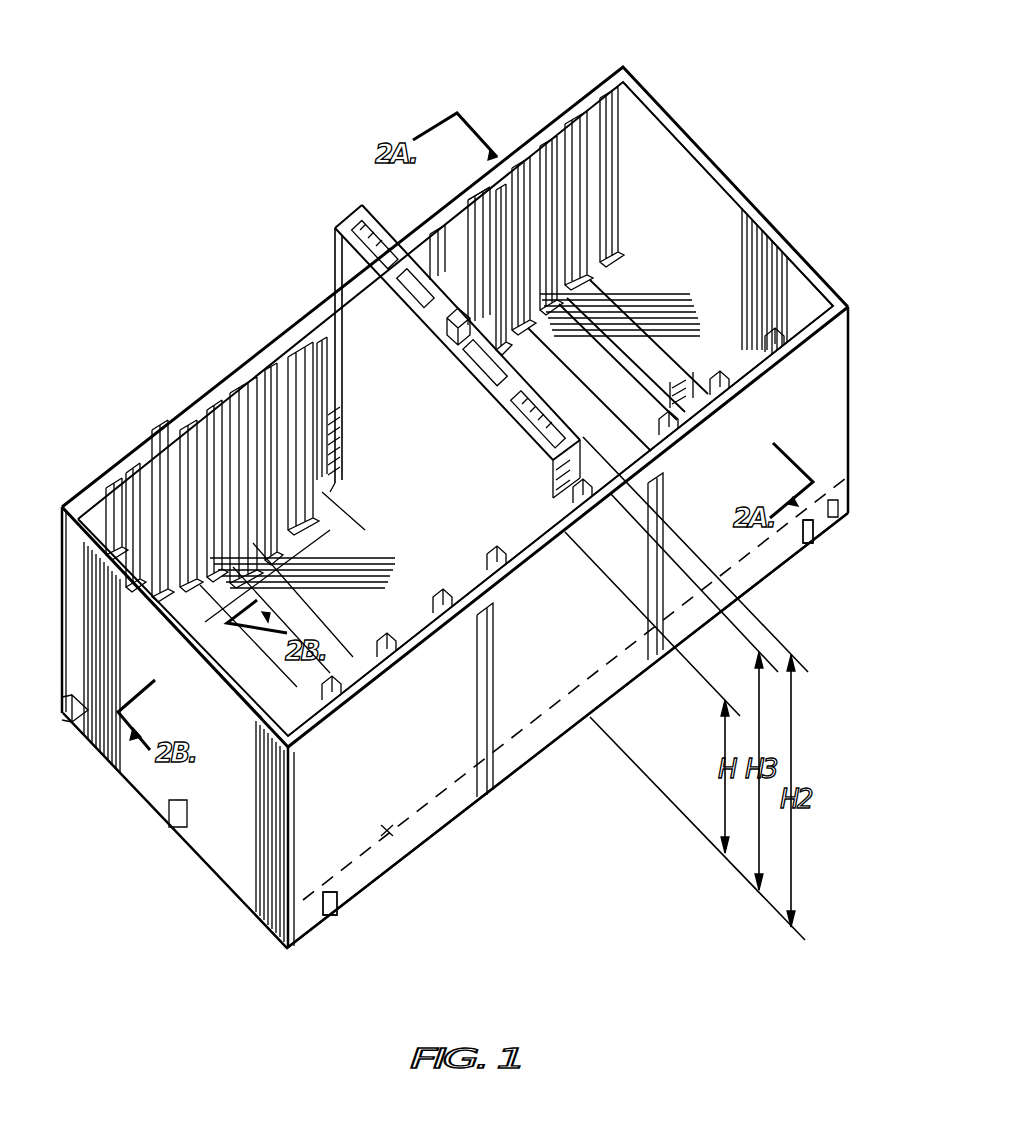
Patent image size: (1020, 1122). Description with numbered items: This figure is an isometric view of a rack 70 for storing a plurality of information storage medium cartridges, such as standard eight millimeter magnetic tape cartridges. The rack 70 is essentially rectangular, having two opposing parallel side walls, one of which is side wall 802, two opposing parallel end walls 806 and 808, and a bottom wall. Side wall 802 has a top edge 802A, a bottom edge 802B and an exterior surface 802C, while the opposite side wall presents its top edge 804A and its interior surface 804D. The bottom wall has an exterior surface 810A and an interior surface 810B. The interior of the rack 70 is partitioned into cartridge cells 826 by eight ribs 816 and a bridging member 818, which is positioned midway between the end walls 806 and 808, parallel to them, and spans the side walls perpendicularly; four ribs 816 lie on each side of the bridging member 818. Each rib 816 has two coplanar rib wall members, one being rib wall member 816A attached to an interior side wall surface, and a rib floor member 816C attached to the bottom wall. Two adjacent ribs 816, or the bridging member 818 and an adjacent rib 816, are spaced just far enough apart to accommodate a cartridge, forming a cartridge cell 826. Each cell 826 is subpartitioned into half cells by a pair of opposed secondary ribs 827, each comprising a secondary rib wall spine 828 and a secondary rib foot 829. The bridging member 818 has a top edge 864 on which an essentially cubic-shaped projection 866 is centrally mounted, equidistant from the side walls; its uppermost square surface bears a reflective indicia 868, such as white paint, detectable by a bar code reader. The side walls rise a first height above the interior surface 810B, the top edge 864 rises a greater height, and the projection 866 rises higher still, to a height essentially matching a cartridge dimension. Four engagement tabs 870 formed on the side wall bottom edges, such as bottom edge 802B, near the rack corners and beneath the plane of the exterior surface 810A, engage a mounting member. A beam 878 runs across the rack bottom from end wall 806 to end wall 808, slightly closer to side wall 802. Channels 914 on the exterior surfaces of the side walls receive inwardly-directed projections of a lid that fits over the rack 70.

The rack 70 is at (686, 878).
The side wall 802 is at (846, 450).
The top edge 802A is at (840, 326).
The bottom edge 802B is at (766, 580).
The exterior surface 802C is at (608, 645).
The top edge 804A is at (224, 388).
The interior surface 804D is at (263, 360).
The end wall 806 is at (237, 834).
The end wall 808 is at (762, 232).
The exterior surface 810A is at (410, 568).
The interior surface 810B is at (387, 862).
The rib 816 is at (582, 542).
The rib wall member 816A is at (520, 207).
The rib floor member 816C is at (600, 382).
The bridging member 818 is at (548, 497).
The cartridge cell 826 is at (334, 322).
The secondary rib 827 is at (338, 398).
The secondary rib wall spine 828 is at (340, 452).
The secondary rib foot 829 is at (345, 492).
The top edge 864 is at (512, 388).
The projection 866 is at (447, 347).
The reflective indicia 868 is at (432, 325).
The engagement tab 870 is at (320, 928).
The beam 878 is at (165, 815).
The channel 914 is at (485, 703).